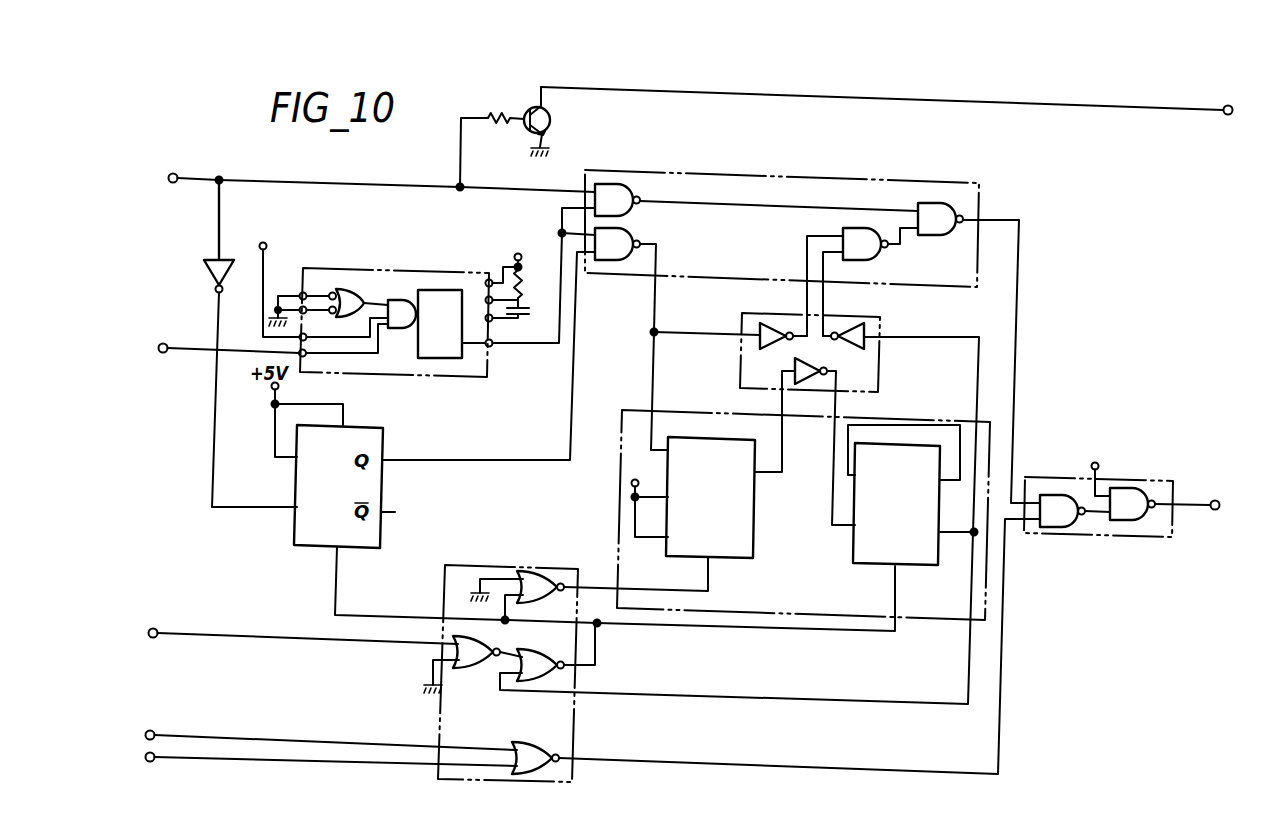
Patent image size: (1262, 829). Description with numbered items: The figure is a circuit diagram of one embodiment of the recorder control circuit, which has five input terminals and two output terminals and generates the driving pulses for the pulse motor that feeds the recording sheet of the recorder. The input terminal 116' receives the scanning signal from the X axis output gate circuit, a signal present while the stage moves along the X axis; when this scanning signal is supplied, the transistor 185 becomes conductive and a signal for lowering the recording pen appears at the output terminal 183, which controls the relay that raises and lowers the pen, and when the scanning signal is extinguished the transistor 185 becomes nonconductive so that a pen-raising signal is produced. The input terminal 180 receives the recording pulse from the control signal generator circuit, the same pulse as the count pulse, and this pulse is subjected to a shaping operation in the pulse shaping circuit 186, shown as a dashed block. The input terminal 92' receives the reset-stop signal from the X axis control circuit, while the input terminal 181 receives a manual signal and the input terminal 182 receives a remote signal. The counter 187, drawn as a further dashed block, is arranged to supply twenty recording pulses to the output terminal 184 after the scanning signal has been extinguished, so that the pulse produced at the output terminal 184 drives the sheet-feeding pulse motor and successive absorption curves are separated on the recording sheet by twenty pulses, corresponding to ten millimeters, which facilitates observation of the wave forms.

The input terminal 116' is at (375, 151).
The output terminal 183 is at (1228, 106).
The transistor 185 is at (551, 127).
The pulse shaping circuit 186 is at (408, 270).
The input terminal 180 is at (164, 353).
The input terminal 92' is at (304, 603).
The input terminal 181 is at (152, 730).
The input terminal 182 is at (152, 762).
The counter 187 is at (758, 617).
The output terminal 184 is at (1215, 501).